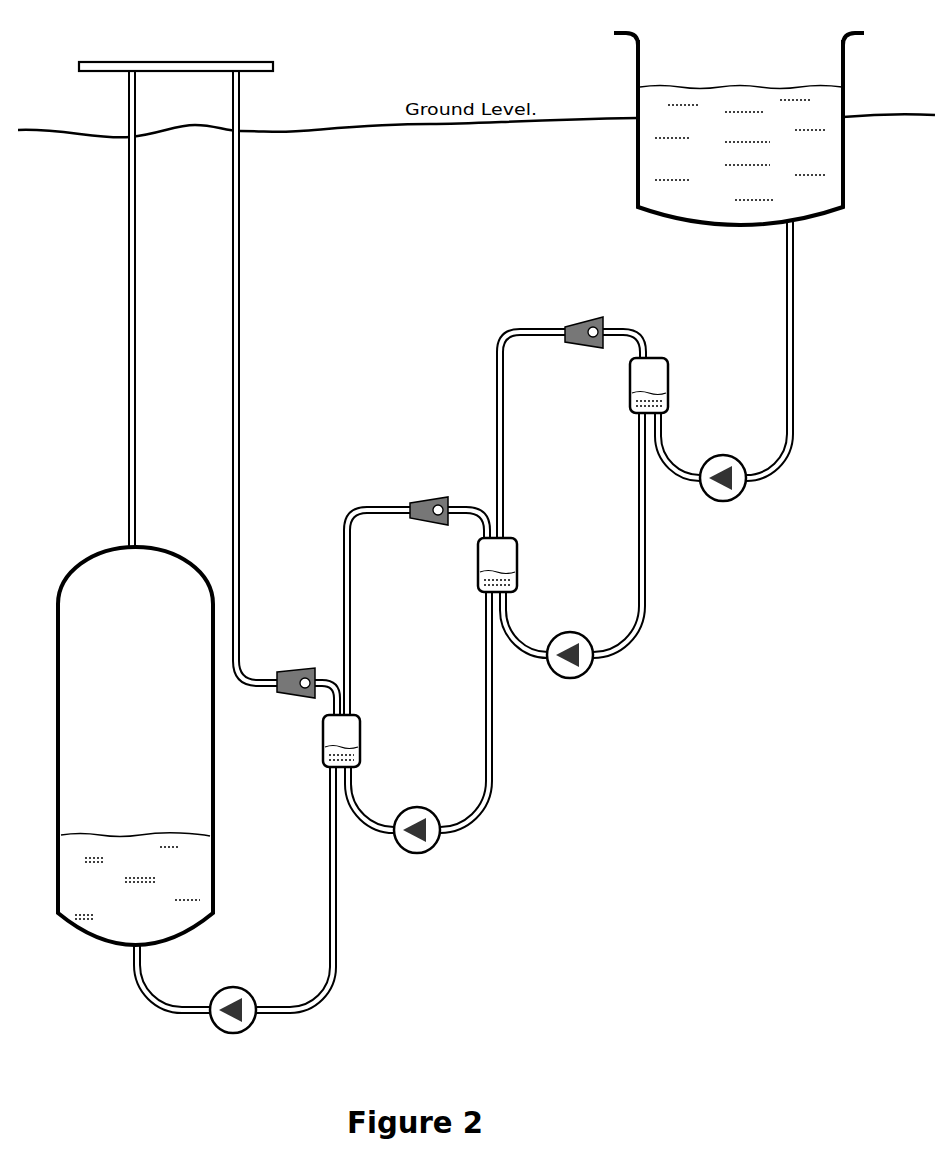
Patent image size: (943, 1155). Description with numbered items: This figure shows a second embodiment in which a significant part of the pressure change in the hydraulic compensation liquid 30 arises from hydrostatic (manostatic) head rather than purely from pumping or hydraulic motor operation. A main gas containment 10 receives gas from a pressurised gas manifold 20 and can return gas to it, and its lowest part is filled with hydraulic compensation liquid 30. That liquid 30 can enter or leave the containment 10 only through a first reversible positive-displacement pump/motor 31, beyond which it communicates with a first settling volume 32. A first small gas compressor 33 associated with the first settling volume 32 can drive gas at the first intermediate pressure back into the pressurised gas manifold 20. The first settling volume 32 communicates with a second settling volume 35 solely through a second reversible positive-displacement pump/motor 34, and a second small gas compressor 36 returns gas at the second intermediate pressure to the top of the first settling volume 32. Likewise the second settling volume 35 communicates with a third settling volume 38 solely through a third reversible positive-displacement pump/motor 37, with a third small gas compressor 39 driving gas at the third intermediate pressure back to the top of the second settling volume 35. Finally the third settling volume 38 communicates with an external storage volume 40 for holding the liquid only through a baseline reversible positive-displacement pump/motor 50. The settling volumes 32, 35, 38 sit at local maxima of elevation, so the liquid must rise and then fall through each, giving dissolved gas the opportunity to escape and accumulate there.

The main gas containment 10 is at (212, 773).
The pressurised gas manifold 20 is at (92, 67).
The hydraulic compensation liquid 30 is at (163, 857).
The first reversible positive-displacement pump/motor 31 is at (213, 1025).
The first settling volume 32 is at (325, 730).
The first small gas compressor 33 is at (283, 677).
The second reversible positive-displacement pump/motor 34 is at (417, 853).
The second settling volume 35 is at (479, 557).
The second small gas compressor 36 is at (418, 502).
The third reversible positive-displacement pump/motor 37 is at (567, 677).
The third settling volume 38 is at (632, 380).
The third small gas compressor 39 is at (573, 322).
The external storage volume 40 is at (638, 68).
The baseline reversible positive-displacement pump/motor 50 is at (725, 502).